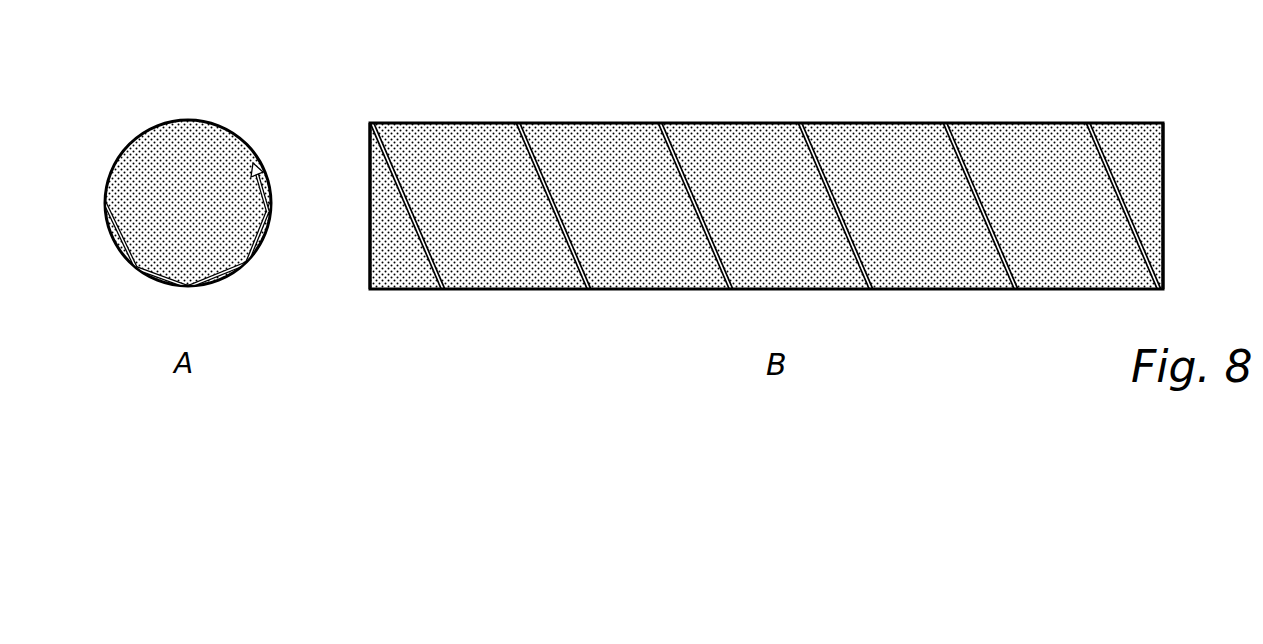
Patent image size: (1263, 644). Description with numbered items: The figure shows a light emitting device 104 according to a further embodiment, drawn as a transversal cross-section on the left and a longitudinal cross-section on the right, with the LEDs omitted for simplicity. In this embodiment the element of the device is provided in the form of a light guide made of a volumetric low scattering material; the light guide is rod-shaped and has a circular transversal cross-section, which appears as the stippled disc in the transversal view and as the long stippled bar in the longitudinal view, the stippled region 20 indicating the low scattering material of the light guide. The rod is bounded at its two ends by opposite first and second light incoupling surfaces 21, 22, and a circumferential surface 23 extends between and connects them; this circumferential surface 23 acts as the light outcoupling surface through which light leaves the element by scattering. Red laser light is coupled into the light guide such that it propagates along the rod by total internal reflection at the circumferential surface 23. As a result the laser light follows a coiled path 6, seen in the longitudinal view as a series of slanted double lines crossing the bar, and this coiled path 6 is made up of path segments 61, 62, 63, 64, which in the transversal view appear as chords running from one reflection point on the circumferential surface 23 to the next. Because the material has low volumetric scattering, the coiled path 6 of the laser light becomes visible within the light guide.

In FIG. 8A, the light emitting device 104 is at (189, 174).
In FIG. 8B, the light emitting device 104 is at (778, 187).
In FIG. 8A, the core material 20 is at (218, 167).
In FIG. 8B, the core material 20 is at (742, 130).
In FIG. 8A, the circumferential surface 23 is at (135, 138).
In FIG. 8B, the circumferential surface 23 is at (1087, 291).
In FIG. 8B, the path 6 is at (393, 157).
In FIG. 8B, the first light incoupling surface 21 is at (370, 205).
In FIG. 8B, the second light incoupling surface 22 is at (1165, 200).
In FIG. 8A, the path segment 61 is at (112, 228).
In FIG. 8A, the path segment 62 is at (155, 280).
In FIG. 8A, the path segment 63 is at (220, 277).
In FIG. 8A, the path segment 64 is at (267, 233).